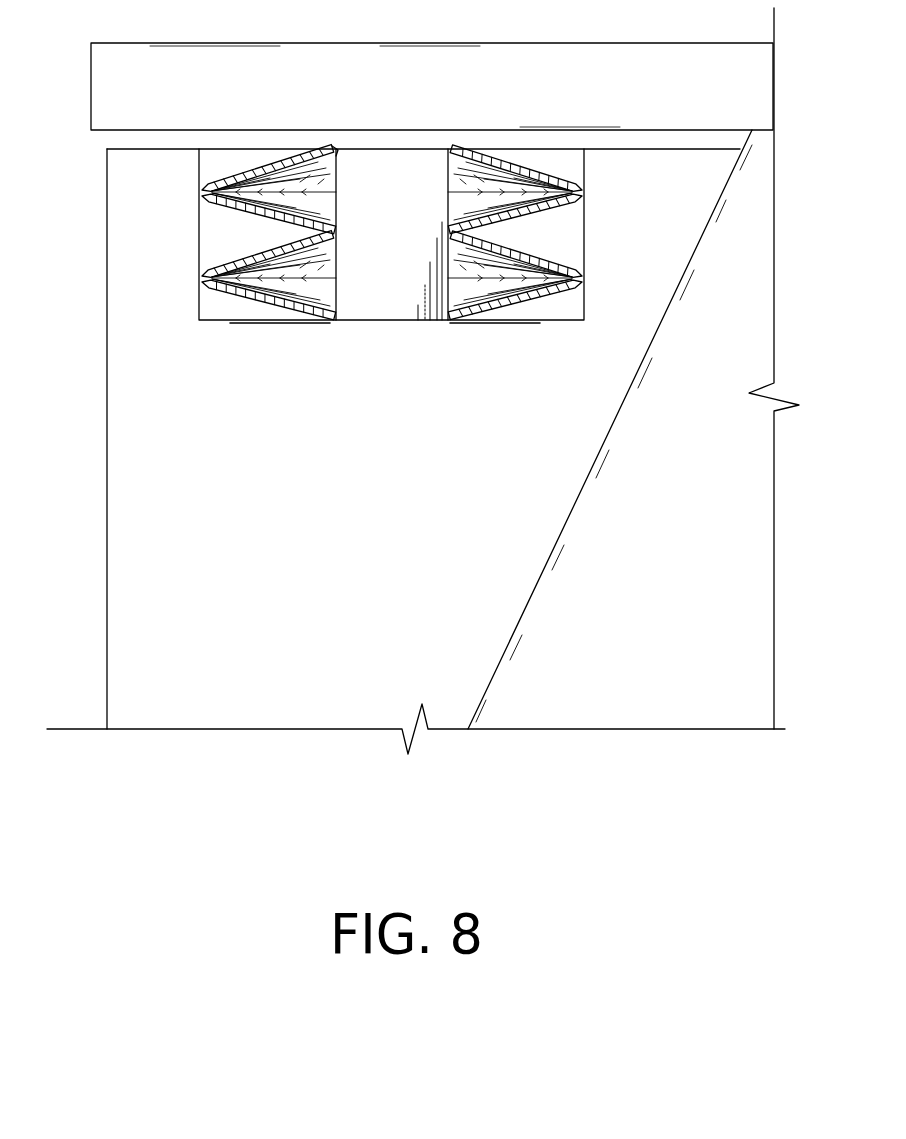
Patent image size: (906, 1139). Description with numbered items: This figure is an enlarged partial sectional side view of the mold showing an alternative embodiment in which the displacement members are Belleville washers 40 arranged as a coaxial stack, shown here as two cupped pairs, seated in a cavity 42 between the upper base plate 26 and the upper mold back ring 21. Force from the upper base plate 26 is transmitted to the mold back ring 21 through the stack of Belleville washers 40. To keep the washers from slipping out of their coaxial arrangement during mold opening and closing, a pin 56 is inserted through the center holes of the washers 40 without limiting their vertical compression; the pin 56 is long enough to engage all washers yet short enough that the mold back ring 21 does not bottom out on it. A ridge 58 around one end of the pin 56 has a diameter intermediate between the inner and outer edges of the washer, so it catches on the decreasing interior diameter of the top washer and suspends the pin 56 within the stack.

The upper mold back ring 21 is at (342, 466).
The upper base plate 26 is at (446, 101).
The Belleville washers 40 is at (262, 165).
The cavity 42 is at (213, 236).
The pin 56 is at (406, 247).
The ridge 58 is at (338, 152).